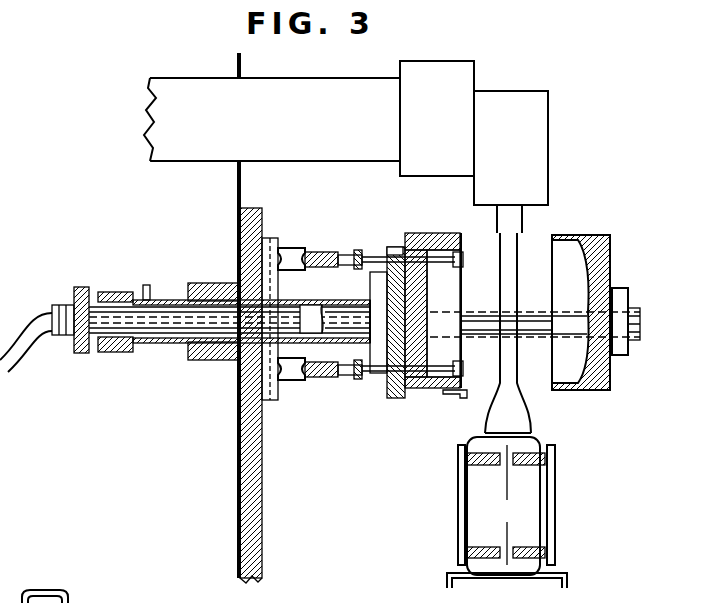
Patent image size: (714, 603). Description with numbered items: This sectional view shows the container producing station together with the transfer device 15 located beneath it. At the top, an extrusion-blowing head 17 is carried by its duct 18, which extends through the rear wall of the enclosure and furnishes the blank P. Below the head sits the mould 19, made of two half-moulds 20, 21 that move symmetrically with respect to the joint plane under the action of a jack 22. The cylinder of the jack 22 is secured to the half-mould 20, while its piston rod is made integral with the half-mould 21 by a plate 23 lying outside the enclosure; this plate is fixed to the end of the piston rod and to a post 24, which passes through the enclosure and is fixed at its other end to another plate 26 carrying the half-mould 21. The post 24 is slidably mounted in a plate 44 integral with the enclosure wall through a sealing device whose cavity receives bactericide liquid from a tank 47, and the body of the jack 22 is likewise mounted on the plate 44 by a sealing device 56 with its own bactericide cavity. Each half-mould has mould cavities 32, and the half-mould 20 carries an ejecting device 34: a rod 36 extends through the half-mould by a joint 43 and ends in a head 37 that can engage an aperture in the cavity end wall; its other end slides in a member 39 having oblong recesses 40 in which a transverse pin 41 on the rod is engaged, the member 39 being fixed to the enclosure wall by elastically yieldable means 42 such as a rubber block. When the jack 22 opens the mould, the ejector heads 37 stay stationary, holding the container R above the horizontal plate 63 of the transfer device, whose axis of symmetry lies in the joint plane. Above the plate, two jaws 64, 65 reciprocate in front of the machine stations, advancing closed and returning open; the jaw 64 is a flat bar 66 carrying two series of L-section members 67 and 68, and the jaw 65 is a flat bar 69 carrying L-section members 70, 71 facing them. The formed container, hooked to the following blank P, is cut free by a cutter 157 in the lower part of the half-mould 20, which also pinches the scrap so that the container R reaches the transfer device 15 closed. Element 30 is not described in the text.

The transfer device 15 is at (531, 439).
The extrusion-blowing head 17 is at (512, 119).
The duct 18 is at (306, 112).
The mould 19 is at (533, 240).
The half-mould 20 is at (412, 395).
The half-mould 21 is at (585, 390).
The jack 22 is at (173, 299).
The plate 23 is at (82, 287).
The post 24 is at (534, 323).
The plate 26 is at (620, 356).
The bracket 30 is at (451, 283).
The mould cavity 32 is at (438, 322).
The ejecting device 34 is at (370, 300).
The rod 36 is at (389, 247).
The head 37 is at (480, 242).
The member 39 is at (323, 252).
The oblong recess 40 is at (373, 250).
The transverse pin 41 is at (356, 252).
The elastically yieldable means 42 is at (290, 248).
The joint 43 is at (416, 247).
The plate 44 is at (262, 448).
The tank 47 is at (82, 602).
The sealing device 56 is at (218, 283).
The horizontal plate 63 is at (562, 574).
The jaw 64 is at (554, 510).
The jaw 65 is at (459, 510).
The flat bar 66 is at (554, 485).
The L-section member 67 is at (528, 458).
The L-section member 68 is at (528, 548).
The flat bar 69 is at (460, 478).
The L-section member 70 is at (481, 457).
The L-section member 71 is at (481, 548).
The cutter 157 is at (460, 392).
The blank P is at (536, 371).
The container R is at (507, 505).